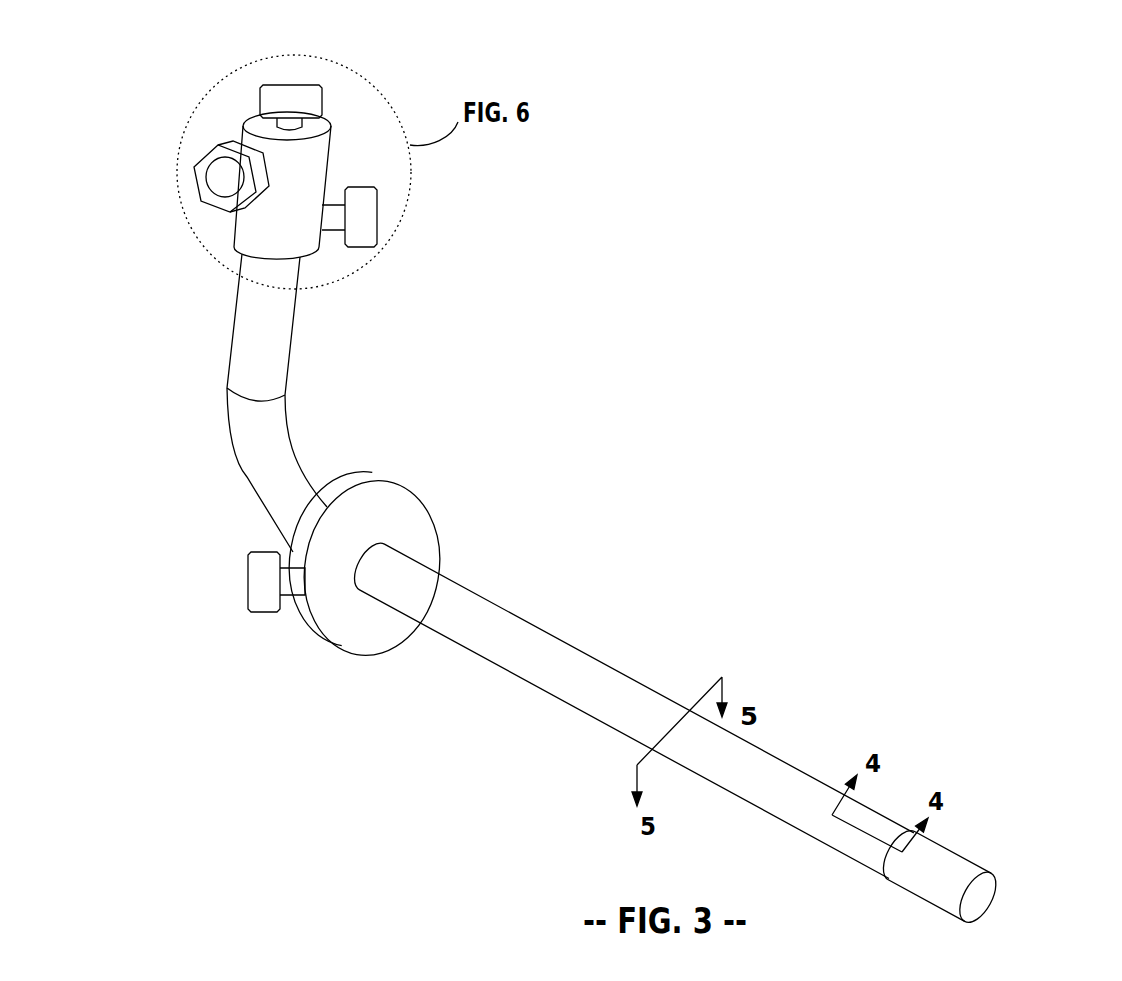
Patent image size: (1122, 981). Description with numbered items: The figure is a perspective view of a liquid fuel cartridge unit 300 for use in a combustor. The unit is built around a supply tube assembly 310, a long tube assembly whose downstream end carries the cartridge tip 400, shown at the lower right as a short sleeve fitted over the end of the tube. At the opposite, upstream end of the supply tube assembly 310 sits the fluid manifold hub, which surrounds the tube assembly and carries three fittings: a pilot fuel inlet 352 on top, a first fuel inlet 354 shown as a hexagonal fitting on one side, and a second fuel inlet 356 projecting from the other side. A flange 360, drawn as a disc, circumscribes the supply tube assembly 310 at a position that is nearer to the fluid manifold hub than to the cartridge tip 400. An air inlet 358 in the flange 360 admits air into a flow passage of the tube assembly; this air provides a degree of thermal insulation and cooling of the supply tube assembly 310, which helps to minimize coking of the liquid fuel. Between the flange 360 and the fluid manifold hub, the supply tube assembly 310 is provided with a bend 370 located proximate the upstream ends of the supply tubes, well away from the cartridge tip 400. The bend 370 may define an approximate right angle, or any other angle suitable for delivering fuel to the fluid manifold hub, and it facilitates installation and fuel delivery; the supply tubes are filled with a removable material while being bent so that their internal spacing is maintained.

The liquid fuel cartridge unit 300 is at (890, 290).
The supply tube assembly 310 is at (586, 648).
The pilot fuel inlet 352 is at (275, 85).
The first fuel inlet 354 is at (198, 163).
The second fuel inlet 356 is at (377, 217).
The air inlet 358 is at (248, 599).
The flange 360 is at (390, 478).
The bend 370 is at (236, 472).
The cartridge tip 400 is at (967, 857).